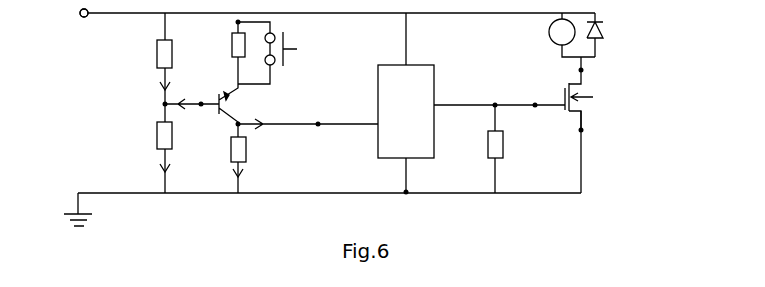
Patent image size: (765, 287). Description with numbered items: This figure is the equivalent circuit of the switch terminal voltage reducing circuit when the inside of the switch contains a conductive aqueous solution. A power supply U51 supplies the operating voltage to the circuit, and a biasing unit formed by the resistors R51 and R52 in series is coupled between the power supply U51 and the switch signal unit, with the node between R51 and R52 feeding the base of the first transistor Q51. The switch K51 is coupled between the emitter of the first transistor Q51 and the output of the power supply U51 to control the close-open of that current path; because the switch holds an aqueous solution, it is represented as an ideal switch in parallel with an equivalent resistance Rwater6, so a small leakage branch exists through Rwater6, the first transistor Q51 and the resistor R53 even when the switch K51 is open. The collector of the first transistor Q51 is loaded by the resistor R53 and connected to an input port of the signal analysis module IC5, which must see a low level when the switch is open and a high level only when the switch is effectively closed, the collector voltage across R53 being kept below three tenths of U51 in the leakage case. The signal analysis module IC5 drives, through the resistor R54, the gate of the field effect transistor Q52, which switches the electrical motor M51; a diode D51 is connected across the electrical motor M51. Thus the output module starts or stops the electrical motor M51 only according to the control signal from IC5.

The power supply U51 is at (70, 92).
The resistor R51 is at (149, 67).
The resistor R52 is at (149, 152).
The equivalent resistance Rwater6 is at (215, 45).
The switch K51 is at (282, 53).
The first transistor Q51 is at (231, 117).
The resistor R53 is at (235, 158).
The signal analysis module IC5 is at (375, 111).
The resistor R54 is at (511, 146).
The electrical motor M51 is at (550, 41).
The diode D51 is at (612, 35).
The second transistor Q52 is at (577, 106).